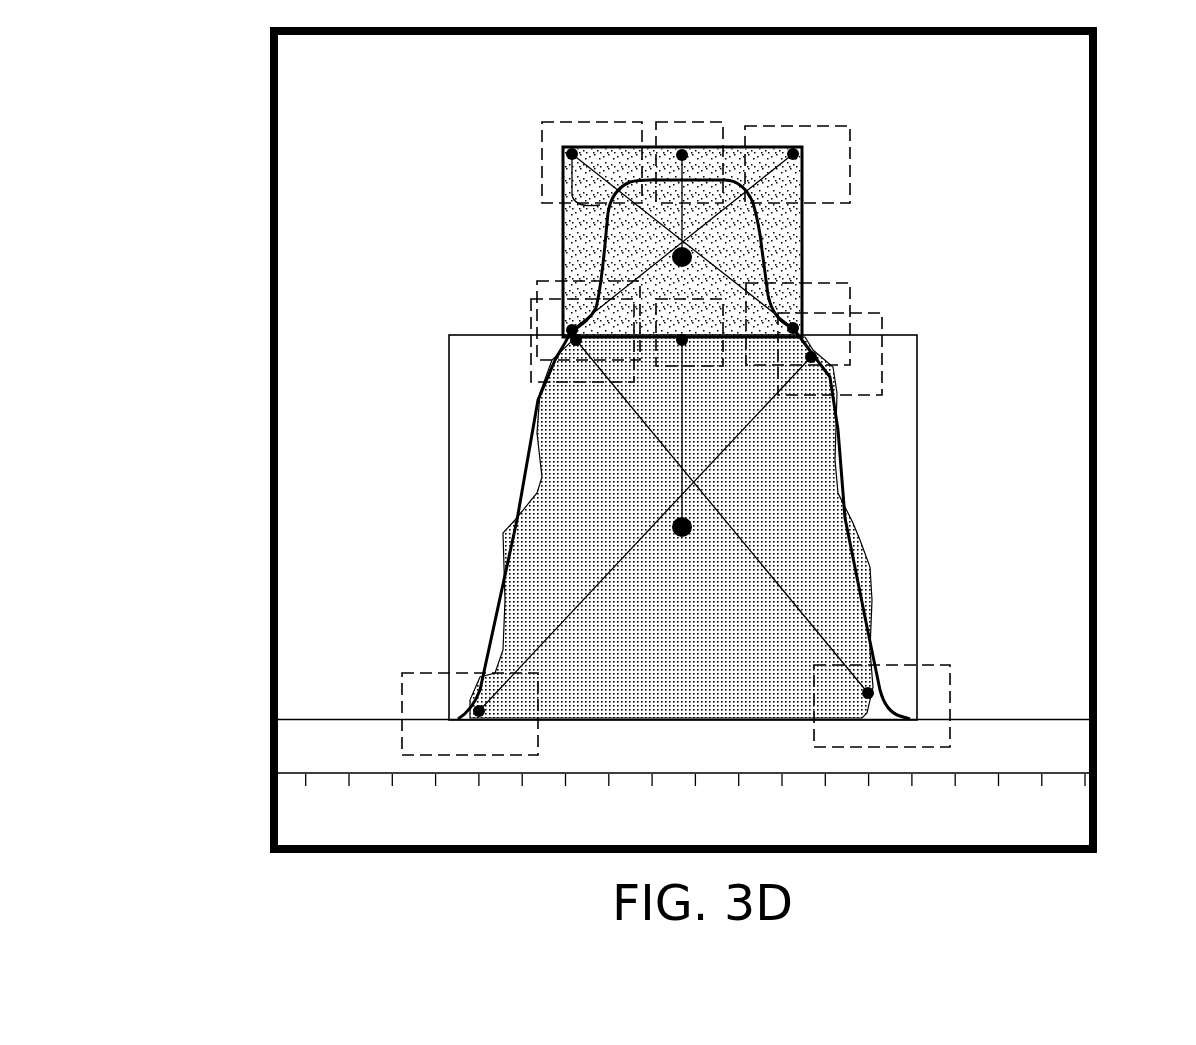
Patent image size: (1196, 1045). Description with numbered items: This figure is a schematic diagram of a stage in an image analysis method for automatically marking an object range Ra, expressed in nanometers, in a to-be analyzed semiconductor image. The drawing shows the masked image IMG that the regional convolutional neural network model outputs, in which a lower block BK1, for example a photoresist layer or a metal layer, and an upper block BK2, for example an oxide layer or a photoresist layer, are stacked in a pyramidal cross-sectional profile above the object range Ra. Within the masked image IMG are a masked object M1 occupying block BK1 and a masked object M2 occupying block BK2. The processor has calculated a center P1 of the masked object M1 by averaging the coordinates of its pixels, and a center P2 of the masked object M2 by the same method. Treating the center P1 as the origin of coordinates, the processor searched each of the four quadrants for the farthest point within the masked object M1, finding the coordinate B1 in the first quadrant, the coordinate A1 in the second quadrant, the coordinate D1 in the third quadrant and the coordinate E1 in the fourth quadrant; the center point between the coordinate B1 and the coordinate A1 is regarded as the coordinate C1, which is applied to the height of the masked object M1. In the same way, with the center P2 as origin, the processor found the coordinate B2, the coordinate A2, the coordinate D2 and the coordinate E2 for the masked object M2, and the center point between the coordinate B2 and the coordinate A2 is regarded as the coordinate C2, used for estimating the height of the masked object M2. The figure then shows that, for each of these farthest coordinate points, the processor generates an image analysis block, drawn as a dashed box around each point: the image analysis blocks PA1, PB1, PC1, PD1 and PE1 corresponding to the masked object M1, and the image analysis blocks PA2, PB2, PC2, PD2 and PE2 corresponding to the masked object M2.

The masked image IMG is at (270, 377).
The object range Ra is at (1050, 719).
The block BK1 is at (447, 520).
The block BK2 is at (562, 218).
The masked object M1 is at (786, 475).
The masked object M2 is at (787, 227).
The center P1 is at (692, 530).
The center P2 is at (692, 255).
The coordinate A1 is at (568, 341).
The coordinate B1 is at (818, 355).
The coordinate C1 is at (680, 348).
The coordinate D1 is at (474, 711).
The coordinate E1 is at (874, 693).
The coordinate A2 is at (566, 154).
The coordinate B2 is at (800, 154).
The coordinate C2 is at (683, 152).
The coordinate D2 is at (566, 327).
The coordinate E2 is at (800, 326).
The image analysis block PA1 is at (530, 382).
The image analysis block PB1 is at (884, 388).
The image analysis block PC1 is at (668, 366).
The image analysis block PD1 is at (402, 700).
The image analysis block PE1 is at (950, 690).
The image analysis block PA2 is at (568, 121).
The image analysis block PB2 is at (818, 125).
The image analysis block PC2 is at (659, 121).
The image analysis block PD2 is at (538, 278).
The image analysis block PE2 is at (852, 293).